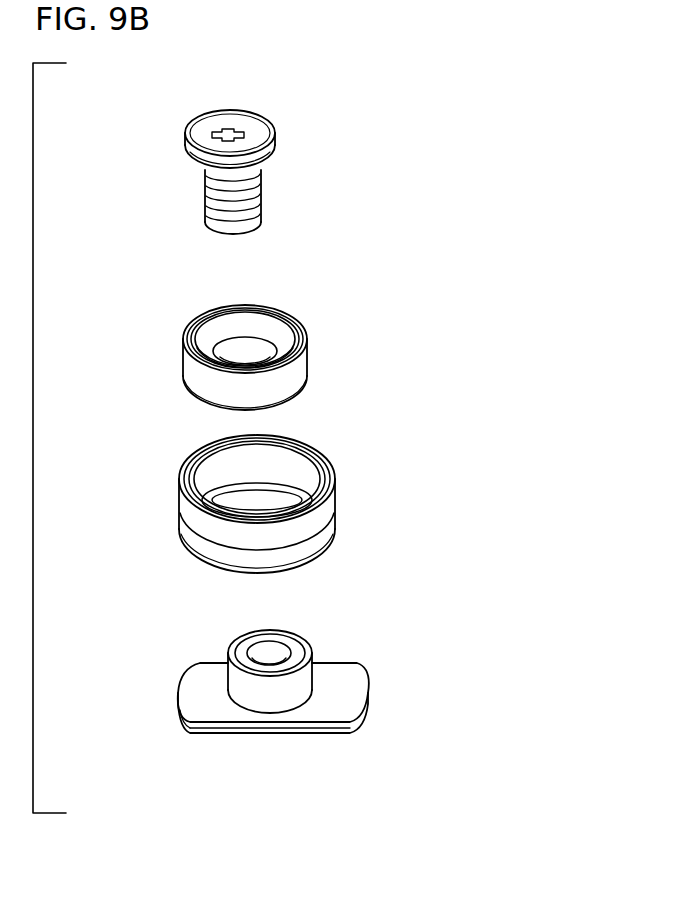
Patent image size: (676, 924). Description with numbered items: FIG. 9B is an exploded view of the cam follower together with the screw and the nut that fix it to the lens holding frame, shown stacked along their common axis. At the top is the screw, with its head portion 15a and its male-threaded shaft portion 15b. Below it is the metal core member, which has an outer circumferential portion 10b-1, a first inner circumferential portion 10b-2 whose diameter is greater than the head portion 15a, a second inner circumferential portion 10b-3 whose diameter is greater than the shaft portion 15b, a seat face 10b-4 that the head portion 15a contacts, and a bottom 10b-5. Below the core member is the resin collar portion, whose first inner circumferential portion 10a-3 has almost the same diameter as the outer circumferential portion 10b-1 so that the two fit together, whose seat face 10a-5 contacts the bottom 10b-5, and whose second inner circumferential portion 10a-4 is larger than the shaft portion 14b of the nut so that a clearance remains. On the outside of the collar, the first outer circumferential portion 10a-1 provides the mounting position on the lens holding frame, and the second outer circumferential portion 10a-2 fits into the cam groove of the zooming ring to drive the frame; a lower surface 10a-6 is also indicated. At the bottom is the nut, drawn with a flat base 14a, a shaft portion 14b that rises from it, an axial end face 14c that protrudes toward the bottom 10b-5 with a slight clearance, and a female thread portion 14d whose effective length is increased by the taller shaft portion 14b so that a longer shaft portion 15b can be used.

The head portion 15a is at (205, 127).
The shaft portion 15b is at (207, 205).
The outer circumferential portion 10b-1 is at (300, 372).
The first inner circumferential portion 10b-2 is at (253, 307).
The second inner circumferential portion 10b-3 is at (263, 352).
The seat face 10b-4 is at (213, 340).
The bottom 10b-5 is at (212, 400).
The first outer circumferential portion 10a-1 is at (320, 541).
The second outer circumferential portion 10a-2 is at (320, 510).
The first inner circumferential portion 10a-3 is at (212, 480).
The second inner circumferential portion 10a-4 is at (285, 485).
The seat face 10a-5 is at (277, 477).
The first elastic member lower surface 10a-6 is at (227, 572).
The nut plate base 14a is at (212, 713).
The shaft portion 14b is at (277, 703).
The axial end face 14c is at (238, 652).
The female thread portion 14d is at (275, 657).